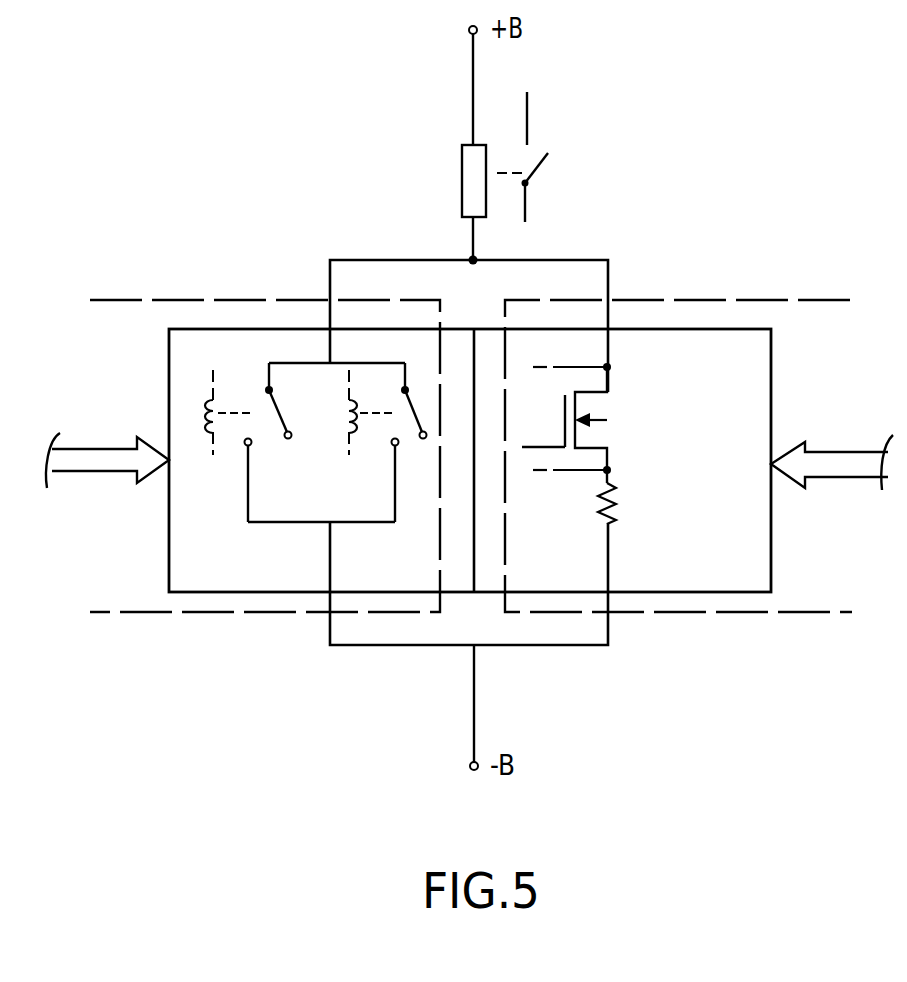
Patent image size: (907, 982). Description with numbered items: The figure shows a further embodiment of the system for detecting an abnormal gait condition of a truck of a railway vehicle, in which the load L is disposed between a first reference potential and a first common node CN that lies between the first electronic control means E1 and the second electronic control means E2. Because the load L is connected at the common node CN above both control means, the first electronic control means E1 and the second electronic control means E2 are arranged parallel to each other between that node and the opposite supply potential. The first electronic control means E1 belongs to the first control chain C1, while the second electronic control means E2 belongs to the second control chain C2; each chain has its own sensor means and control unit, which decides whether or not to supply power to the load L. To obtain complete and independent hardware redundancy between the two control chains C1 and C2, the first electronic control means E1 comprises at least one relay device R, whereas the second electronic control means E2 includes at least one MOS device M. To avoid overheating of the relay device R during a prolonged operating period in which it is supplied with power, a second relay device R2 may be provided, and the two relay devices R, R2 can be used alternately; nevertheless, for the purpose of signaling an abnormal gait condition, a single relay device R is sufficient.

The load L is at (462, 177).
The first common node CN is at (494, 247).
The first electronic control means E1 is at (316, 464).
The second electronic control means E2 is at (708, 345).
The MOS device M is at (607, 467).
The first control chain C1 is at (108, 583).
The second control chain C2 is at (829, 585).
The relay device R is at (285, 443).
The second relay device R2 is at (407, 440).